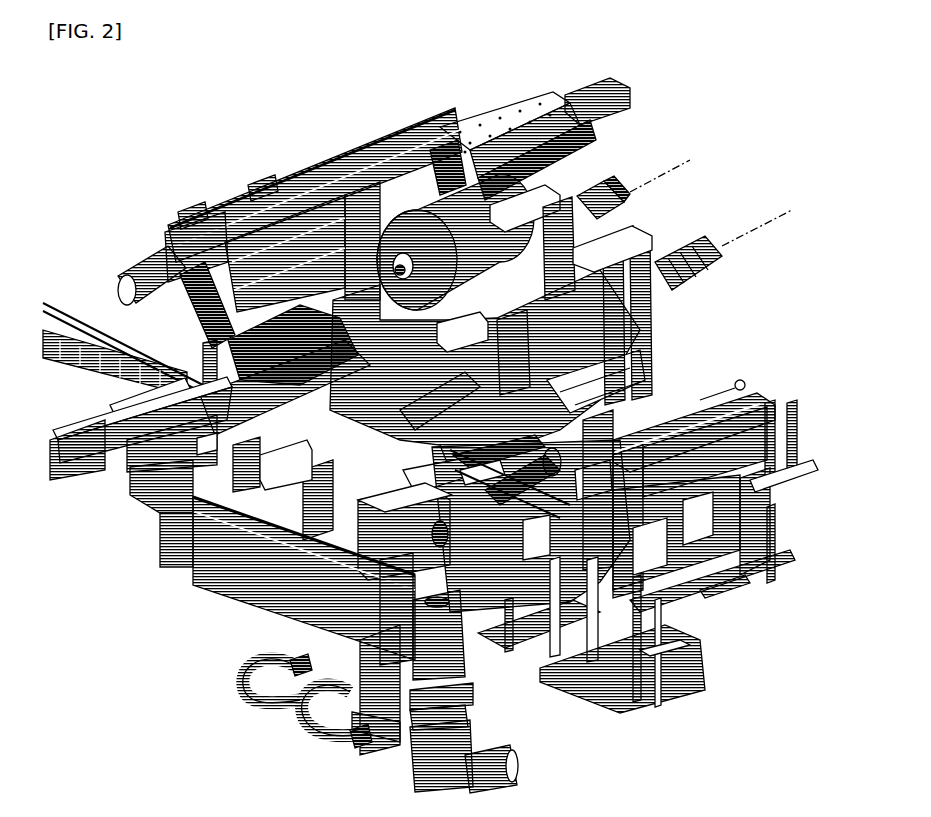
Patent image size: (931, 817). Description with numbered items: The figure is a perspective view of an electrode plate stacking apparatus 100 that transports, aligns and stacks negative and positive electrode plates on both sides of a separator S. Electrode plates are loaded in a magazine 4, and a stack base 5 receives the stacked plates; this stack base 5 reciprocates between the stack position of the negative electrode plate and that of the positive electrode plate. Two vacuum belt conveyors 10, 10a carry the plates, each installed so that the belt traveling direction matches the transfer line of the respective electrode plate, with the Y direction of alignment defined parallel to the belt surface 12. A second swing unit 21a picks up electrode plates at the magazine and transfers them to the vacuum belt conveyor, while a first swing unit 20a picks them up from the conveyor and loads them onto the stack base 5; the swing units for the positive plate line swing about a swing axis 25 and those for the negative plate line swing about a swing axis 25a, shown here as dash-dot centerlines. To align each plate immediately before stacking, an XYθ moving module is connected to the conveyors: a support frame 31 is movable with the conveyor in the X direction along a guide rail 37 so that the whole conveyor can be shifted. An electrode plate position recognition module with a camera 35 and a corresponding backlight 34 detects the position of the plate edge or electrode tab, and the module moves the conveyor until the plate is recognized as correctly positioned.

The electrode plate stacking apparatus 100 is at (660, 781).
The separator S is at (483, 248).
The magazine 4 is at (708, 354).
The stack base 5 is at (457, 468).
The vacuum belt conveyor 10 is at (227, 377).
The vacuum belt conveyor 10a is at (766, 373).
The belt surface 12 is at (228, 405).
The first swing unit 20a is at (660, 336).
The second swing unit 21a is at (672, 303).
The swing axis 25 is at (683, 178).
The swing axis 25a is at (776, 236).
The support frame 31 is at (267, 233).
The backlight 34 is at (205, 282).
The camera 35 is at (300, 400).
The guide rail 37 is at (350, 158).